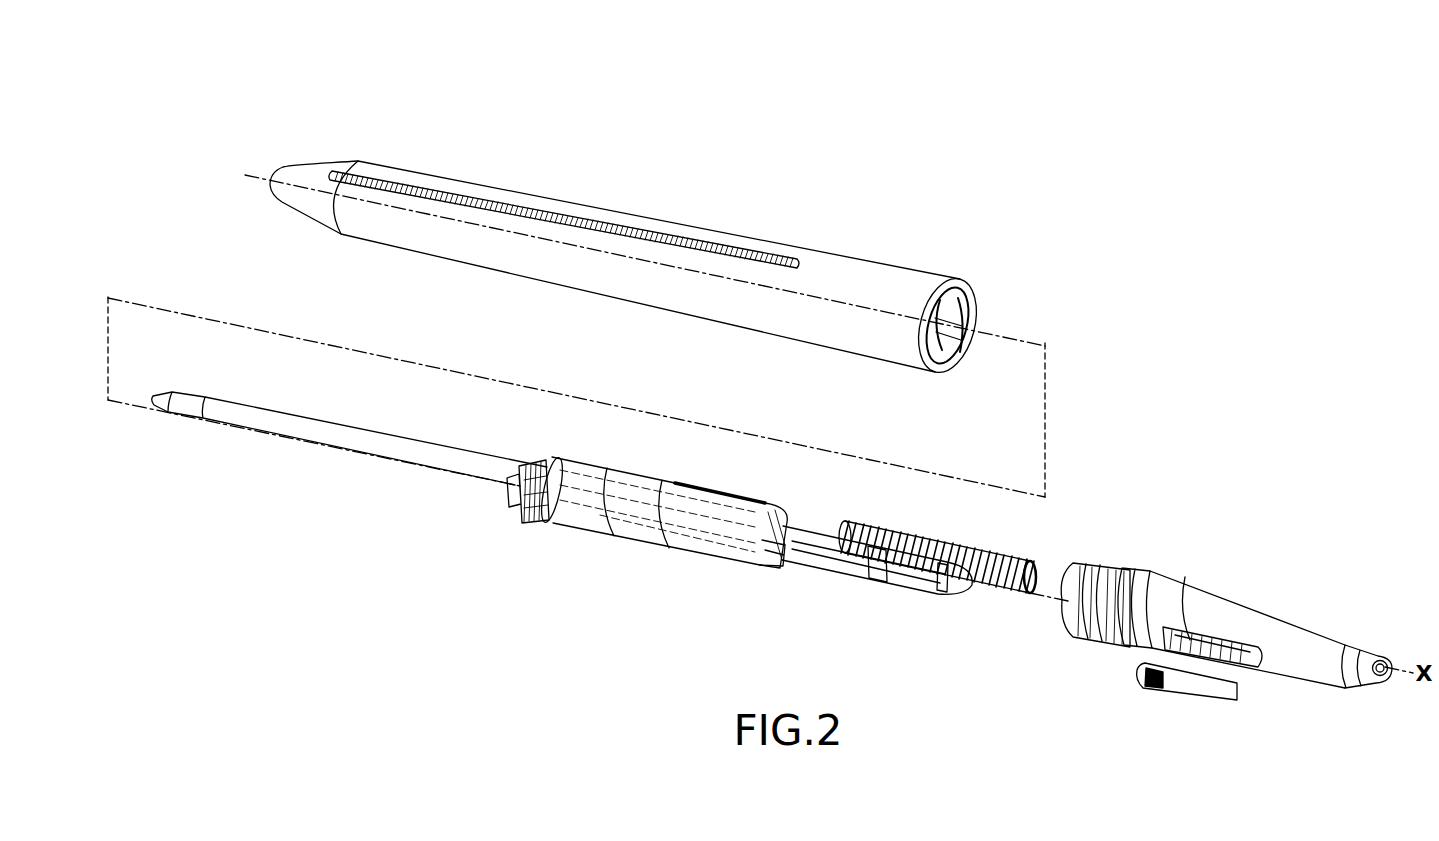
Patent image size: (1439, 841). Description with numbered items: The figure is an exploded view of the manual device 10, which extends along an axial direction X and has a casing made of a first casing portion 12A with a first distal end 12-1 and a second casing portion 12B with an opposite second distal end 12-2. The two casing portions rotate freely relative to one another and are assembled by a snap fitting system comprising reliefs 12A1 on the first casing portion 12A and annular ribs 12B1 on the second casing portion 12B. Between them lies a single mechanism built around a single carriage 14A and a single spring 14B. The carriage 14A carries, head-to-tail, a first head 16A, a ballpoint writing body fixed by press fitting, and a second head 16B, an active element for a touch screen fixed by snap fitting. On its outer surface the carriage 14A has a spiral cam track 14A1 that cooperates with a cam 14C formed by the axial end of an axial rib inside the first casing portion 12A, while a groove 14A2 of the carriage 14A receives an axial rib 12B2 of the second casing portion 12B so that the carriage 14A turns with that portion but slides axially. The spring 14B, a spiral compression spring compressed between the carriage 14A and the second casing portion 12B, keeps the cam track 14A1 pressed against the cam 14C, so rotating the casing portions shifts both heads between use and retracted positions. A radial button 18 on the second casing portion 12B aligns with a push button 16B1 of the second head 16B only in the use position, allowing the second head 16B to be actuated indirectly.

The manual device 10 is at (1167, 160).
The first casing portion 12A is at (895, 275).
The first distal end 12-1 is at (273, 178).
The cam 14C is at (797, 257).
The reliefs 12A1 is at (988, 332).
The first head 16A is at (357, 437).
The spiral cam track 14A1 is at (598, 518).
The carriage 14A is at (661, 540).
The groove 14A2 is at (738, 492).
The push button 16B1 is at (761, 564).
The second head 16B is at (848, 566).
The spring 14B is at (912, 540).
The axial rib 12B2 is at (1062, 602).
The annular ribs 12B1 is at (1150, 576).
The second casing portion 12B is at (1192, 578).
The second distal end 12-2 is at (1385, 658).
The radial button 18 is at (1196, 692).